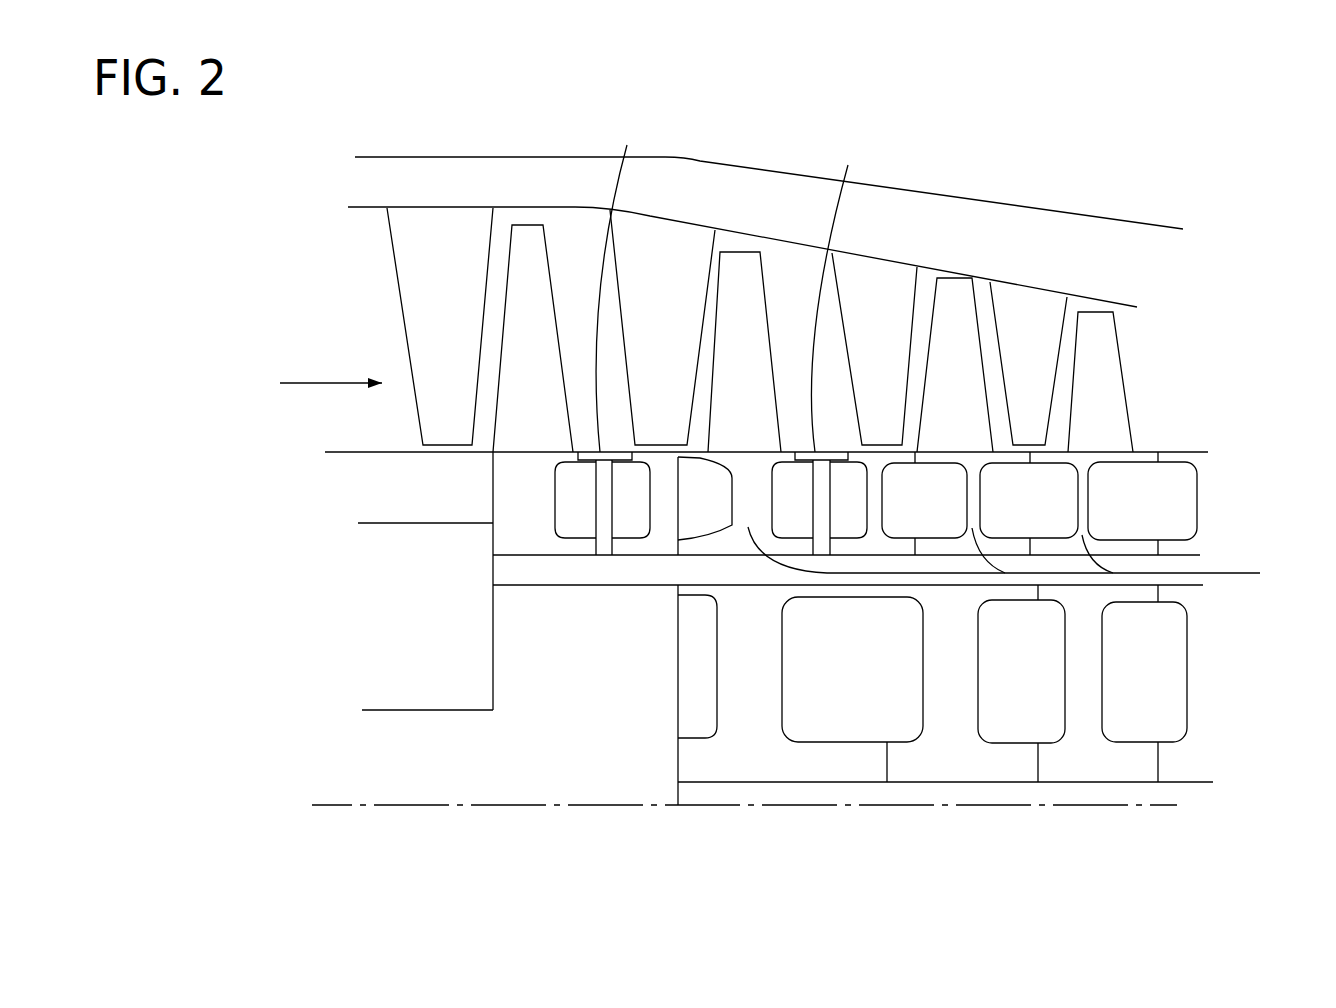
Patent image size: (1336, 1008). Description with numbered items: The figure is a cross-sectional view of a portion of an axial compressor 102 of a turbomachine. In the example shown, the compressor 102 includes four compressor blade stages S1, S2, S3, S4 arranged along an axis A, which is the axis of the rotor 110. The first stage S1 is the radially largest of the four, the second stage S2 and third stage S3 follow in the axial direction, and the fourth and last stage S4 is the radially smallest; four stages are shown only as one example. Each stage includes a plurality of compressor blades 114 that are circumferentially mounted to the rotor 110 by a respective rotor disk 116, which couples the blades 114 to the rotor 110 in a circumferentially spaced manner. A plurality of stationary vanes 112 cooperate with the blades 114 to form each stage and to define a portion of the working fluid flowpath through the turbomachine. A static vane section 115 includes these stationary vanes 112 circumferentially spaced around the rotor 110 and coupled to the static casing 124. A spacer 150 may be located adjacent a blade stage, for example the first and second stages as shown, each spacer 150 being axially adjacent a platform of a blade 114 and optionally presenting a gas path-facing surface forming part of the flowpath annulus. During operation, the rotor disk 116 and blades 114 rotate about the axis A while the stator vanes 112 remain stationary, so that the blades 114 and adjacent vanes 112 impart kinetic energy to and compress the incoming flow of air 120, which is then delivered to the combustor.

The axial compressor 102 is at (218, 313).
The rotor 110 is at (1193, 784).
The stationary vanes 112 is at (464, 257).
The compressor blades 114 is at (561, 416).
The static vane section 115 is at (693, 217).
The rotor disk 116 is at (1031, 557).
The incoming flow of air 120 is at (300, 387).
The static casing 124 is at (1055, 235).
The spacer 150 is at (741, 284).
The axis A is at (495, 805).
The first compressor blade stage S1 is at (535, 147).
The second compressor blade stage S2 is at (735, 147).
The third compressor blade stage S3 is at (957, 187).
The fourth compressor blade stage S4 is at (1148, 207).